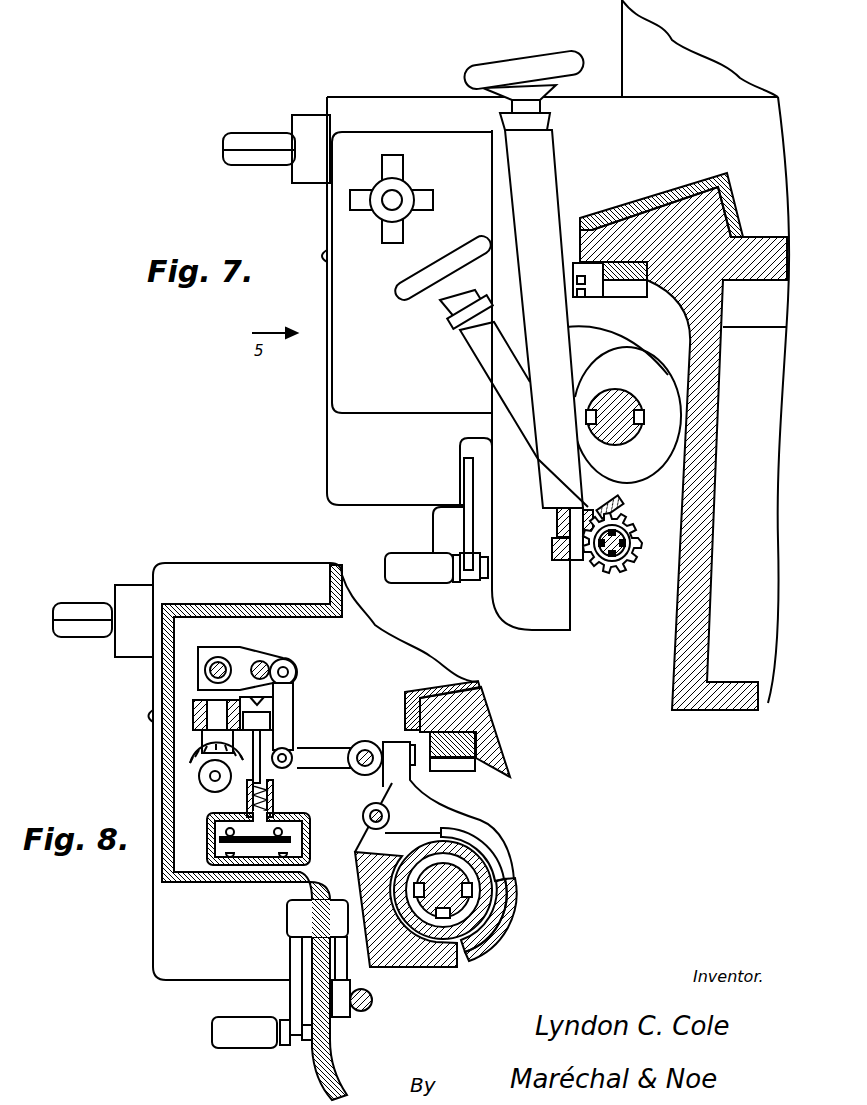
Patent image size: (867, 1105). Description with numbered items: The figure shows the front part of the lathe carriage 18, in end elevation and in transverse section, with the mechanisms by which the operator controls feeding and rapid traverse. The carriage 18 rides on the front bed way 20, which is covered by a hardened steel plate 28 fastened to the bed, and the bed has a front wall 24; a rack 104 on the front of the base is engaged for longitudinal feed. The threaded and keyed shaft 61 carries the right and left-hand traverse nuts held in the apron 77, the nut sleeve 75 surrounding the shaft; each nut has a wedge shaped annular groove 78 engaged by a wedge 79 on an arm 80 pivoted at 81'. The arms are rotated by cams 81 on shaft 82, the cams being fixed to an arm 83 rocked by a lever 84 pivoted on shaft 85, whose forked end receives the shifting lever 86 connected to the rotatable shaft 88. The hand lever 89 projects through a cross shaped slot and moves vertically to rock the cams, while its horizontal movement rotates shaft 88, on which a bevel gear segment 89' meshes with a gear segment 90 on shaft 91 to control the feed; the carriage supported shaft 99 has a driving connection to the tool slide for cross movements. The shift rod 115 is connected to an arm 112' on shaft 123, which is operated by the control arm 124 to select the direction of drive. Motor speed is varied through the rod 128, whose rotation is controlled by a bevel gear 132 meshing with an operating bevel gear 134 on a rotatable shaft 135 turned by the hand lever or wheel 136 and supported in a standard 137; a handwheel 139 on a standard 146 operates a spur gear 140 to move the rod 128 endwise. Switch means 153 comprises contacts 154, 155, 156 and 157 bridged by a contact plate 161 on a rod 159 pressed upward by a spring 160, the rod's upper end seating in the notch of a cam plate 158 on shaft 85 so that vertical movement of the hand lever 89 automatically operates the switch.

In FIG. 7, the carriage 18 is at (755, 108).
In FIG. 7, the front bed way 20 is at (685, 197).
In FIG. 7, the front wall of the bed 24 is at (707, 457).
In FIG. 7, the hardened steel plate 28 is at (643, 203).
In FIG. 8, the hardened steel plate 28 is at (477, 682).
In FIG. 7, the shaft 61 is at (637, 403).
In FIG. 8, the shaft 61 is at (456, 958).
In FIG. 8, the sleeve 75 is at (473, 893).
In FIG. 8, the apron 77 is at (490, 950).
In FIG. 8, the wedge shaped annular groove 78 is at (508, 913).
In FIG. 8, the wedge 79 is at (477, 853).
In FIG. 8, the arm 80 is at (465, 820).
In FIG. 8, the cam 81 is at (361, 743).
In FIG. 8, the pivot 81' is at (361, 816).
In FIG. 8, the shaft 82 is at (377, 748).
In FIG. 8, the arm 83 is at (327, 745).
In FIG. 8, the lever 84 is at (285, 661).
In FIG. 8, the shaft 85 is at (260, 661).
In FIG. 8, the shifting lever 86 is at (213, 659).
In FIG. 8, the rotatable shaft 88 is at (213, 710).
In FIG. 7, the hand lever 89 is at (405, 199).
In FIG. 8, the bevel gear segment 89' is at (202, 741).
In FIG. 8, the gear segment 90 is at (215, 780).
In FIG. 8, the shaft 91 is at (213, 780).
In FIG. 7, the carriage supported shaft 99 is at (252, 140).
In FIG. 8, the carriage supported shaft 99 is at (77, 610).
In FIG. 7, the rack 104 is at (635, 297).
In FIG. 8, the rack 104 is at (462, 762).
In FIG. 8, the arm 112' is at (360, 990).
In FIG. 8, the shift rod 115 is at (378, 997).
In FIG. 8, the shaft 123 is at (322, 918).
In FIG. 7, the control arm 124 is at (466, 526).
In FIG. 8, the control arm 124 is at (293, 967).
In FIG. 7, the rod 128 is at (640, 553).
In FIG. 7, the bevel gear 132 is at (632, 522).
In FIG. 7, the operating bevel gear 134 is at (622, 500).
In FIG. 7, the rotatable shaft 135 is at (458, 308).
In FIG. 7, the hand lever or wheel 136 is at (402, 300).
In FIG. 7, the standard 137 is at (483, 357).
In FIG. 7, the handwheel 139 is at (524, 62).
In FIG. 7, the spur gear 140 is at (552, 562).
In FIG. 7, the standard 146 is at (543, 155).
In FIG. 8, the switch means 153 is at (222, 840).
In FIG. 8, the contact 154 is at (215, 830).
In FIG. 8, the contact 155 is at (293, 820).
In FIG. 8, the contact 156 is at (230, 855).
In FIG. 8, the contact 157 is at (285, 855).
In FIG. 8, the cam plate 158 is at (270, 693).
In FIG. 8, the rod 159 is at (260, 742).
In FIG. 8, the spring 160 is at (273, 790).
In FIG. 8, the contact plate 161 is at (278, 823).